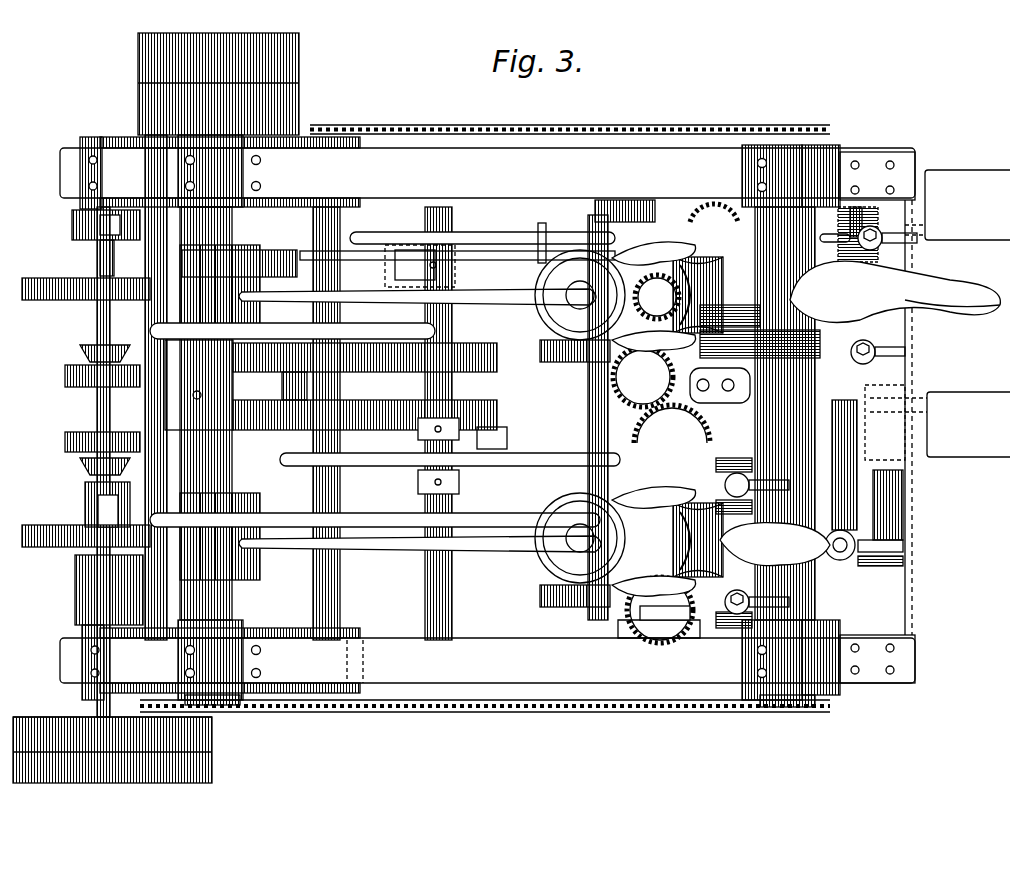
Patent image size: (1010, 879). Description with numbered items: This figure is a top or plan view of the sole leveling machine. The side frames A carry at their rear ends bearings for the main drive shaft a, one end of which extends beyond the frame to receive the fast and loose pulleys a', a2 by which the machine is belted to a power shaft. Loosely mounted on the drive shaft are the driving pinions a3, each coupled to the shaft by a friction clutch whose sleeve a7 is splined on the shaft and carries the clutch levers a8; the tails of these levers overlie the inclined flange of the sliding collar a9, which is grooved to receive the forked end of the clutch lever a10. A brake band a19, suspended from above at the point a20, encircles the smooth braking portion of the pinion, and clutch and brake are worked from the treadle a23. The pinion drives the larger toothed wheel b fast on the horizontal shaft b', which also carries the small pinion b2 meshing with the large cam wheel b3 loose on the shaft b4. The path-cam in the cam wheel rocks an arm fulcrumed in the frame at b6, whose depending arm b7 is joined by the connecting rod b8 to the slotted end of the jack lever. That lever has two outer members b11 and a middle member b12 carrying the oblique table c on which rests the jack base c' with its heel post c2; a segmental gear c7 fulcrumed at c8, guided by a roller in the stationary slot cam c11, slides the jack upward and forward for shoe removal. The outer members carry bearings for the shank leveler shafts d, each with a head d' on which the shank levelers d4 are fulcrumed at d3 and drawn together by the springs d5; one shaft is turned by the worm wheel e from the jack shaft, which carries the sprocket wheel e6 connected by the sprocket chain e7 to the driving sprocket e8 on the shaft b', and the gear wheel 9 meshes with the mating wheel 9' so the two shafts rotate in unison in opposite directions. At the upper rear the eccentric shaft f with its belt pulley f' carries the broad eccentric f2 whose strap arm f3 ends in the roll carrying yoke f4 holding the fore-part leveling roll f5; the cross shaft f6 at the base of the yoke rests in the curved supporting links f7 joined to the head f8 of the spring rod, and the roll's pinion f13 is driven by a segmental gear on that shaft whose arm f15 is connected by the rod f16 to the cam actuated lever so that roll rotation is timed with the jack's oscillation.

The side frames A is at (487, 415).
The main drive shaft a is at (80, 462).
The fast pulley a' is at (129, 751).
The loose pulley a2 is at (212, 735).
The driving pinion a3 is at (95, 560).
The sleeve a7 is at (85, 495).
The clutch levers a8 is at (80, 352).
The sliding collar a9 is at (80, 468).
The clutch lever a10 is at (65, 440).
The brake band a19 is at (100, 226).
The suspension point a20 is at (100, 240).
The treadle a23 is at (957, 205).
The toothed wheel b is at (227, 413).
The horizontal shaft b' is at (276, 423).
The small pinion b2 is at (200, 365).
The cam wheel b3 is at (380, 383).
The horizontal shaft b4 is at (342, 595).
The fulcrum b6 is at (452, 603).
The depending arm b7 is at (400, 260).
The connecting rod b8 is at (497, 208).
The outer members of jack lever b11 is at (712, 215).
The middle member of jack lever b12 is at (770, 285).
The table c is at (819, 355).
The jack base c' is at (952, 330).
The heel post c2 is at (855, 545).
The segmental gear c7 is at (880, 548).
The fulcrum of segmental gear c8 is at (890, 495).
The slot cam c11 is at (903, 560).
The shank leveler shaft d is at (812, 477).
The head d' is at (892, 242).
The leveler fulcrum d3 is at (870, 255).
The shank levelers d4 is at (852, 262).
The springs d5 is at (863, 210).
The worm wheel e is at (668, 640).
The sprocket wheel e6 is at (790, 712).
The sprocket chain e7 is at (610, 712).
The driving sprocket e8 is at (225, 705).
The eccentric shaft f is at (239, 433).
The belt pulley f' is at (235, 84).
The eccentric f2 is at (245, 580).
The eccentric arm f3 is at (380, 556).
The roll carrying yoke f4 is at (690, 340).
The fore-part leveling roll f5 is at (660, 417).
The cross shaft f6 is at (598, 372).
The curved supporting links f7 is at (560, 335).
The head f8 is at (500, 325).
The pinion f13 is at (668, 445).
The laterally extended arm f15 is at (628, 210).
The rod f16 is at (538, 215).
The gear wheel 9 is at (653, 452).
The mating wheel 9' is at (654, 419).